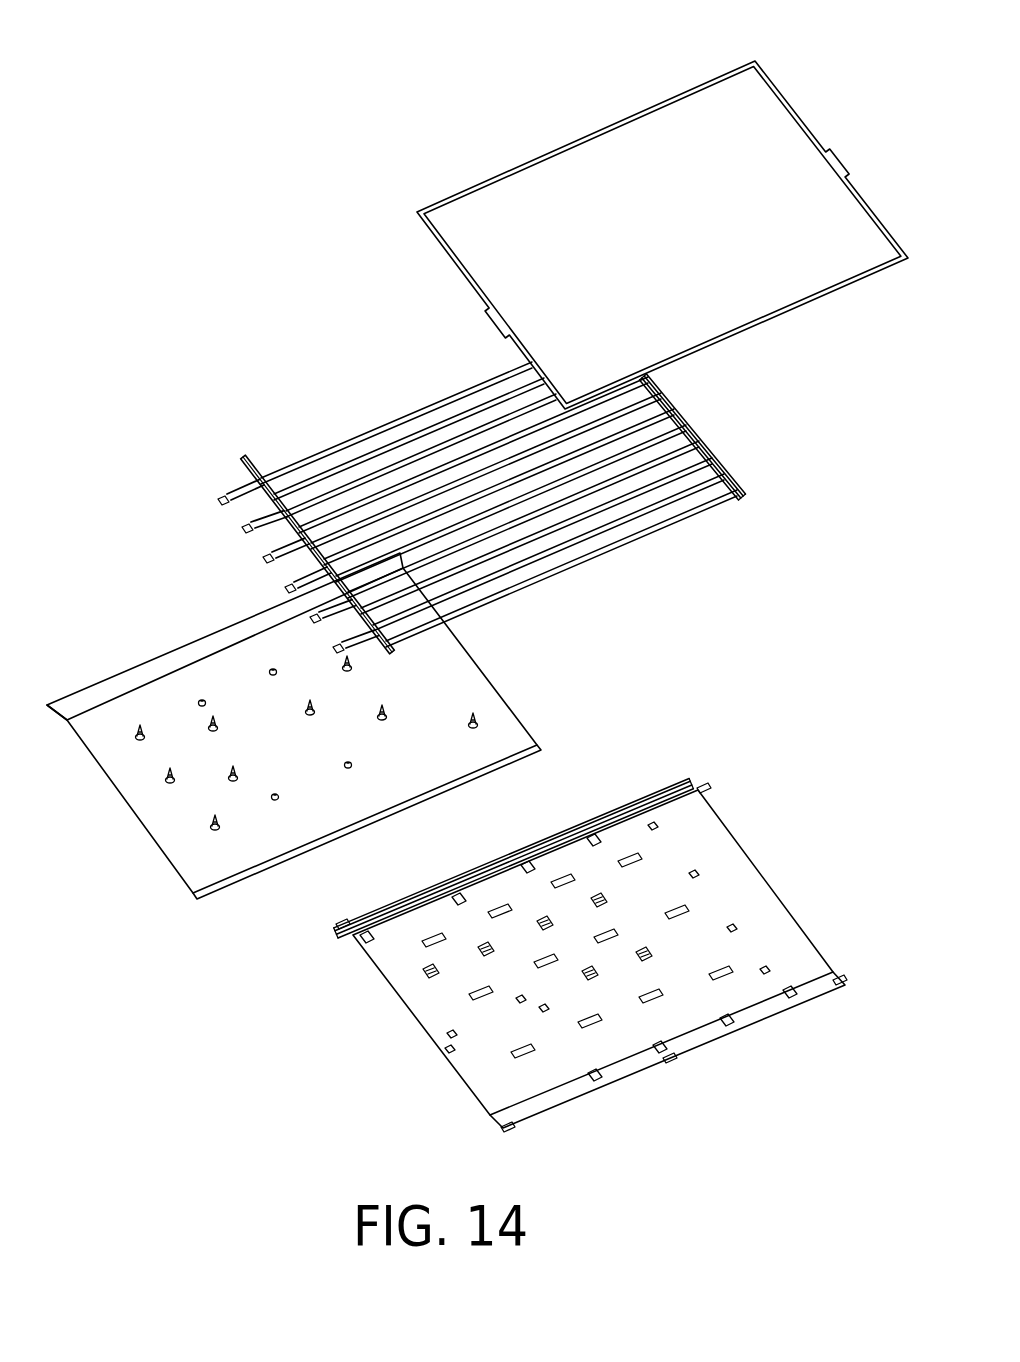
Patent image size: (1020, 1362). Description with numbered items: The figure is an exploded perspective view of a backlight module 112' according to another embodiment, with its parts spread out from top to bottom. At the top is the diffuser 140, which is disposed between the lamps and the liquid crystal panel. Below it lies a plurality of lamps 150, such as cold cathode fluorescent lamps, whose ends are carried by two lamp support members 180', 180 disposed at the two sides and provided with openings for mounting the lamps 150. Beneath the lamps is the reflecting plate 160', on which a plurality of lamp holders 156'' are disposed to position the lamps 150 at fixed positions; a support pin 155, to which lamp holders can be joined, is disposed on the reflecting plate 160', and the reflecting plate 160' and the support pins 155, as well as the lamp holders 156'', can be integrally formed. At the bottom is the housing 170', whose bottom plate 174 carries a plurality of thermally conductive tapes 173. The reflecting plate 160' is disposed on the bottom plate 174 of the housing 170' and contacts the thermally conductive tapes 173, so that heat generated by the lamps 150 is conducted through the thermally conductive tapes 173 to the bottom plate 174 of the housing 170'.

The backlight module 112' is at (195, 66).
The diffuser 140 is at (765, 117).
The lamps 150 is at (613, 518).
The lamp support member 180' is at (289, 517).
The lamp support member 180 is at (727, 437).
The reflecting plate 160' is at (329, 726).
The support pin 155 is at (479, 724).
The lamp holders 156'' is at (345, 743).
The housing 170' is at (601, 957).
The bottom plate 174 is at (730, 867).
The thermally conductive tapes 173 is at (718, 962).